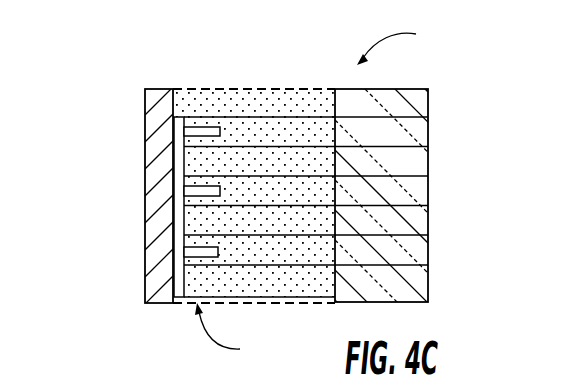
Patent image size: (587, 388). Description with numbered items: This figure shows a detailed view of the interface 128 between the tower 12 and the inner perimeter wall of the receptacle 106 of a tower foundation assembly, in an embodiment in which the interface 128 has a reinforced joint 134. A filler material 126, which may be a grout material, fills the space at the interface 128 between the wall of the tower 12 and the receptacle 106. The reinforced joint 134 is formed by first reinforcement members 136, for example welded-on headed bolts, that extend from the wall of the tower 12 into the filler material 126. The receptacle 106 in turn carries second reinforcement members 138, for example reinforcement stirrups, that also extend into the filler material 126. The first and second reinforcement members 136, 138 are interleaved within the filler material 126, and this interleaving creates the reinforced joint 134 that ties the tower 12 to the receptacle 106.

The tower 12 is at (158, 217).
The receptacle 106 is at (408, 102).
The filler material 126 is at (240, 108).
The interface 128 is at (404, 42).
The reinforced joint 134 is at (235, 335).
The first reinforcement members 136 is at (203, 127).
The second reinforcement members 138 is at (396, 178).